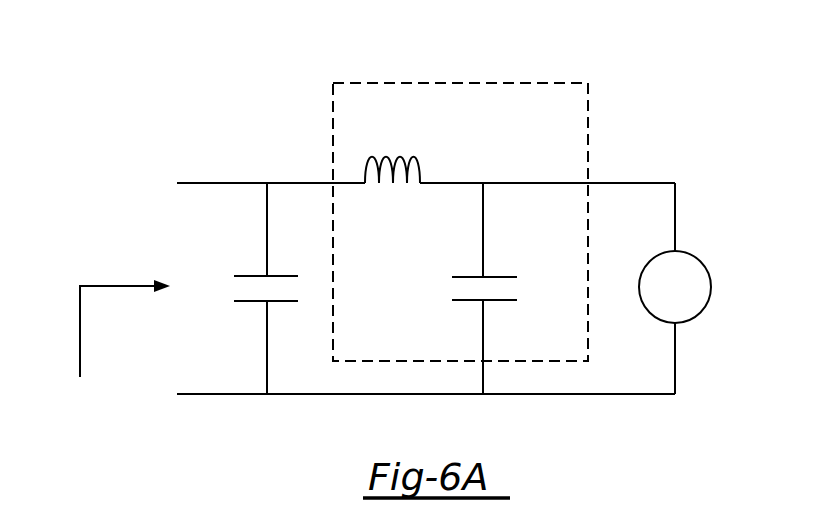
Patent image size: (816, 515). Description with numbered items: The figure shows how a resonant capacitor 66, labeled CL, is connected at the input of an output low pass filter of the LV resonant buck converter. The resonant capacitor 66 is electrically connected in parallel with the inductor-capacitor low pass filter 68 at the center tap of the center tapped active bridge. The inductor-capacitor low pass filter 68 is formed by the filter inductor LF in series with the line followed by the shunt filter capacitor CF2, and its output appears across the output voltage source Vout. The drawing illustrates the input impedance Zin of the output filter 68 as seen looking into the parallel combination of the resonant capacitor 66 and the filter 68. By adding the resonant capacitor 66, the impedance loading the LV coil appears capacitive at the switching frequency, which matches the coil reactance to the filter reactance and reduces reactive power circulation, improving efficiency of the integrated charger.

The resonant capacitor 66 is at (277, 288).
The inductor-capacitor low pass filter 68 is at (455, 83).
The filter inductor LF is at (392, 149).
The resonant capacitor CL is at (275, 271).
The filter capacitor CF2 is at (501, 288).
The output voltage source Vout is at (707, 288).
The input impedance Zin is at (115, 348).